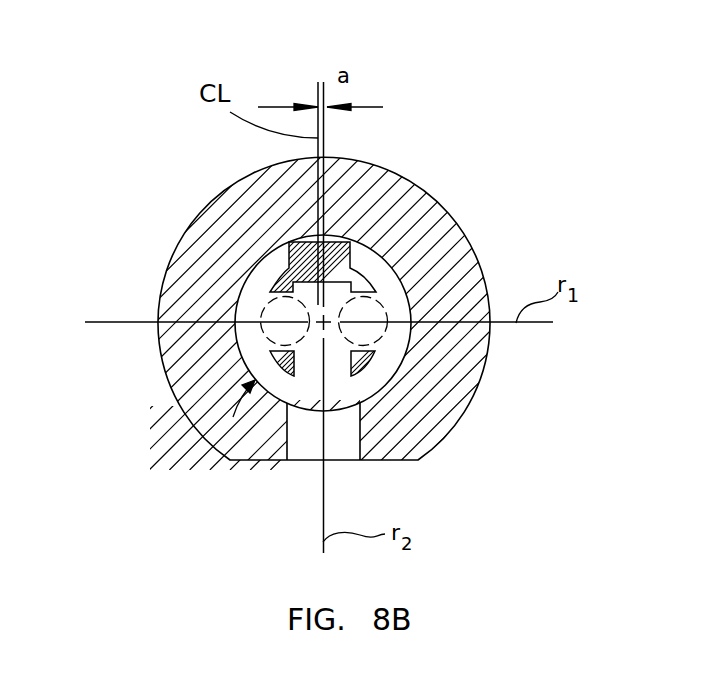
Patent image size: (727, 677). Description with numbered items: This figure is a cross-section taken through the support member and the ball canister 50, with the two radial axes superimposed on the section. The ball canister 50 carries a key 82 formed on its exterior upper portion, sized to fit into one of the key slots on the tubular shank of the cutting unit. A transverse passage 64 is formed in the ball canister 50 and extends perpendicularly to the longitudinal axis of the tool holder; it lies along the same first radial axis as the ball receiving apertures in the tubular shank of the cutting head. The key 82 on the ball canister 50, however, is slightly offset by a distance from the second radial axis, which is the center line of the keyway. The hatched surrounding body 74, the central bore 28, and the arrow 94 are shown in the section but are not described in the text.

The housing body 74 is at (470, 375).
The bore 28 is at (242, 288).
The ball canister 50 is at (214, 428).
The key 82 is at (350, 262).
The transverse passage 64 is at (378, 293).
The rotation direction arrow 94 is at (270, 342).